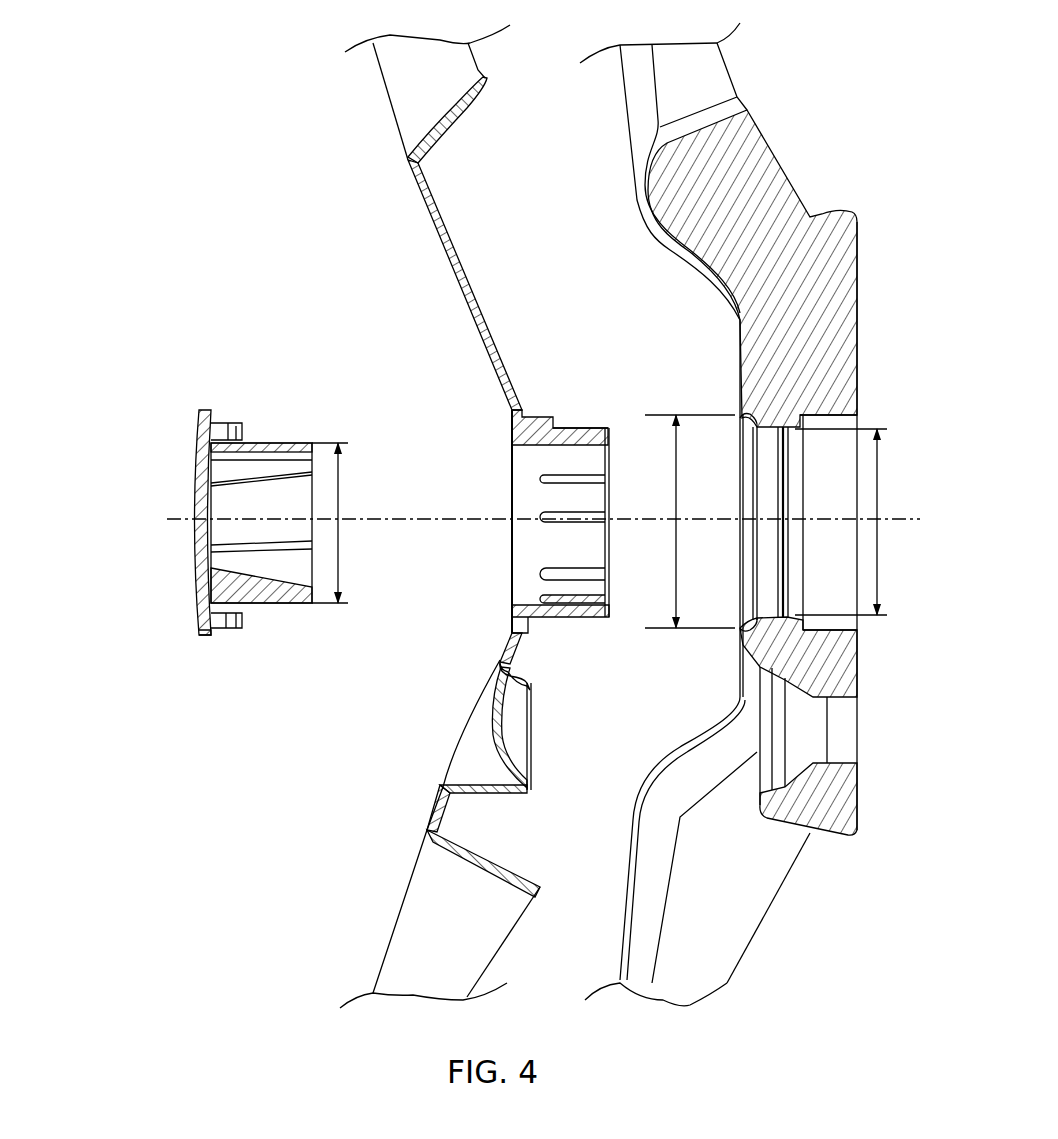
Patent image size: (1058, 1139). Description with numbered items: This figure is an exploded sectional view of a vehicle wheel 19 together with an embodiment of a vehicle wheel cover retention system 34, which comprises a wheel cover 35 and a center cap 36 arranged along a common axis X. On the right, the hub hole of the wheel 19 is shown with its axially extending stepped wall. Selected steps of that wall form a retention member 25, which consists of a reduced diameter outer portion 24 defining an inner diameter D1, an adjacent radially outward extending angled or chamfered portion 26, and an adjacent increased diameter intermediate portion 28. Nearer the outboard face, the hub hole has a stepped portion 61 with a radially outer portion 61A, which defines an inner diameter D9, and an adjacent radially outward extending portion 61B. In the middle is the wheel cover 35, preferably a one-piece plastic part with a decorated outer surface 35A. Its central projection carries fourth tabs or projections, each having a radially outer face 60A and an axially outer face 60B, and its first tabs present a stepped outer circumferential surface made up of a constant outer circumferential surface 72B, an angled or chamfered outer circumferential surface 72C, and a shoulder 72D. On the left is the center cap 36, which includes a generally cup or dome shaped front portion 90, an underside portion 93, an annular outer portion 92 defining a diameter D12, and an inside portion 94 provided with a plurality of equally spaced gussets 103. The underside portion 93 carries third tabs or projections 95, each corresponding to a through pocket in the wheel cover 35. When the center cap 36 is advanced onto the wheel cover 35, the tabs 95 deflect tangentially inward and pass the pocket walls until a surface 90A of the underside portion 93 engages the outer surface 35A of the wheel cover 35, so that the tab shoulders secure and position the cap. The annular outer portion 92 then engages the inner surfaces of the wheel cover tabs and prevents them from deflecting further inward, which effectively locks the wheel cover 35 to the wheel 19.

The vehicle wheel 19 is at (765, 133).
The reduced diameter outer portion 24 is at (784, 428).
The retention member 25 is at (832, 426).
The chamfered portion 26 is at (847, 618).
The increased diameter intermediate portion 28 is at (858, 420).
The vehicle wheel cover retention system 34 is at (370, 666).
The wheel cover 35 is at (445, 292).
The outer surface of the wheel cover 35A is at (510, 428).
The center cap 36 is at (193, 465).
The radially outer face 60A is at (548, 417).
The axially outer face 60B is at (562, 421).
The stepped portion 61 is at (752, 479).
The radially outer portion 61A is at (743, 418).
The radially outward extending portion 61B is at (748, 623).
The constant outer circumferential surface 72B is at (553, 618).
The chamfered outer circumferential surface 72C is at (593, 618).
The shoulder 72D is at (583, 612).
The front portion 90 is at (195, 520).
The surface of the underside portion 90A is at (210, 636).
The outer portion 92 is at (273, 606).
The underside portion 93 is at (215, 421).
The inside portion 94 is at (287, 457).
The third tabs or projections 95 is at (243, 623).
The gussets 103 is at (219, 543).
The inner diameter D1 is at (878, 494).
The inner diameter D9 is at (675, 465).
The diameter D12 is at (340, 576).
The axis X is at (468, 520).